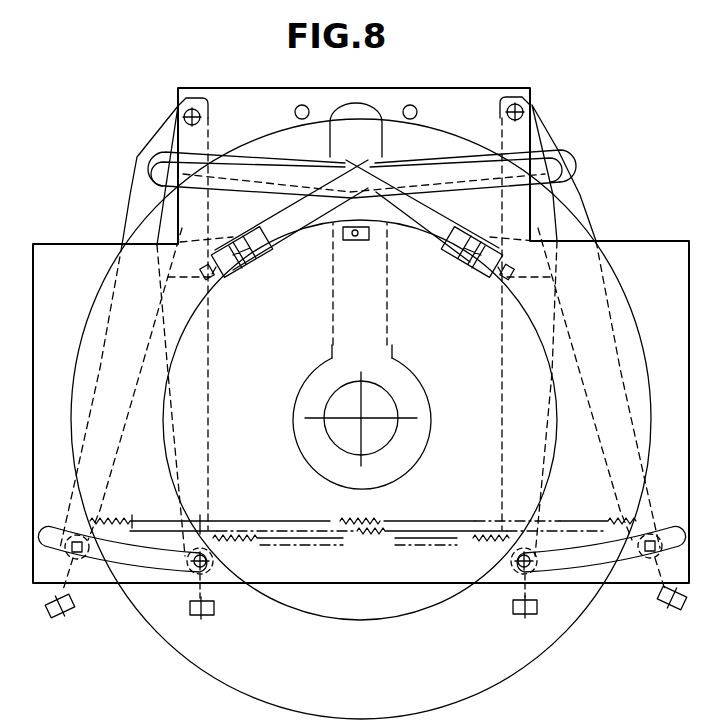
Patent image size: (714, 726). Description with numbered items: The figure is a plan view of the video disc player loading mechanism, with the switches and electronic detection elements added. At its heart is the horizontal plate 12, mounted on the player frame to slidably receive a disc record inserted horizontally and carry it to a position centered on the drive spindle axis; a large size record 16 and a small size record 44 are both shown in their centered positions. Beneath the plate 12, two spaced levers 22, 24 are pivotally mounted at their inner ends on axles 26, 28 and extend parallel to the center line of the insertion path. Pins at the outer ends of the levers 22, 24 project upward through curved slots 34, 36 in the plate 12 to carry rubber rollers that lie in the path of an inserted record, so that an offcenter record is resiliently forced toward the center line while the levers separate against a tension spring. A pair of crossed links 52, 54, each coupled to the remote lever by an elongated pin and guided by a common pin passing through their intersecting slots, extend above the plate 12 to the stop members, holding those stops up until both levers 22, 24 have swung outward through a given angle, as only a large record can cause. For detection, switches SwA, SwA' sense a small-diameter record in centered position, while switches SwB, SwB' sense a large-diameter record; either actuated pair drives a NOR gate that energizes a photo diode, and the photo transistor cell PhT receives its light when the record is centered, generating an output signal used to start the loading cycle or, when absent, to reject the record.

The horizontal plate 12 is at (650, 248).
The large size record 16 is at (500, 668).
The lever 22 is at (92, 350).
The lever 24 is at (632, 348).
The axle 26 is at (178, 106).
The axle 28 is at (533, 105).
The curved slot 34 is at (138, 545).
The curved slot 36 is at (590, 543).
The small size record 44 is at (377, 608).
The link 52 is at (250, 173).
The link 54 is at (440, 173).
The photo transistor cell PhT is at (360, 241).
The switch SwA is at (216, 619).
The switch SwA' is at (504, 617).
The switch SwB is at (58, 627).
The switch SwB' is at (653, 621).